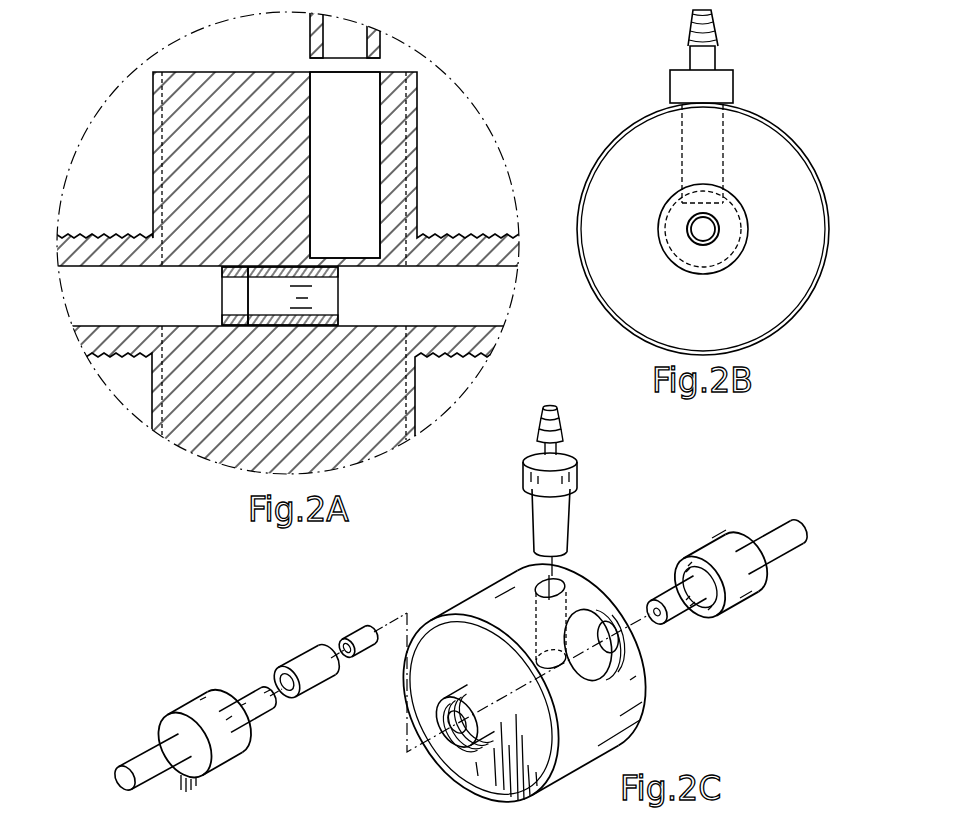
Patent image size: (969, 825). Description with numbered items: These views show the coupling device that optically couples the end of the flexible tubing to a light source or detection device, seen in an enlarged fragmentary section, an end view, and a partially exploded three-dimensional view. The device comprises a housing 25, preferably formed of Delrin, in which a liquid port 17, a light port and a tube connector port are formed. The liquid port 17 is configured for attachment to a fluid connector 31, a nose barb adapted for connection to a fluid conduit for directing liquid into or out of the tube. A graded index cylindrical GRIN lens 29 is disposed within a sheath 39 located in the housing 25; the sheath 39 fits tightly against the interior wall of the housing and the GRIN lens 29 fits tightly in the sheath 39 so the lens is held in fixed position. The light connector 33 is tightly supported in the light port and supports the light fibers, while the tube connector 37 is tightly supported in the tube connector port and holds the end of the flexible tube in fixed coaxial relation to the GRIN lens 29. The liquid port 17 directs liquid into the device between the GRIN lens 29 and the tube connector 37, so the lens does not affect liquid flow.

In FIG. 2A, the housing 25 is at (226, 70).
In FIG. 2B, the housing 25 is at (782, 120).
In FIG. 2C, the housing 25 is at (598, 594).
In FIG. 2A, the liquid port 17 is at (357, 143).
In FIG. 2A, the GRIN lens 29 is at (338, 298).
In FIG. 2C, the GRIN lens 29 is at (353, 637).
In FIG. 2A, the sheath 39 is at (214, 276).
In FIG. 2C, the sheath 39 is at (299, 656).
In FIG. 2B, the fluid connector 31 is at (721, 34).
In FIG. 2C, the fluid connector 31 is at (579, 473).
In FIG. 2C, the light connector 33 is at (152, 720).
In FIG. 2C, the tube connector 37 is at (740, 534).